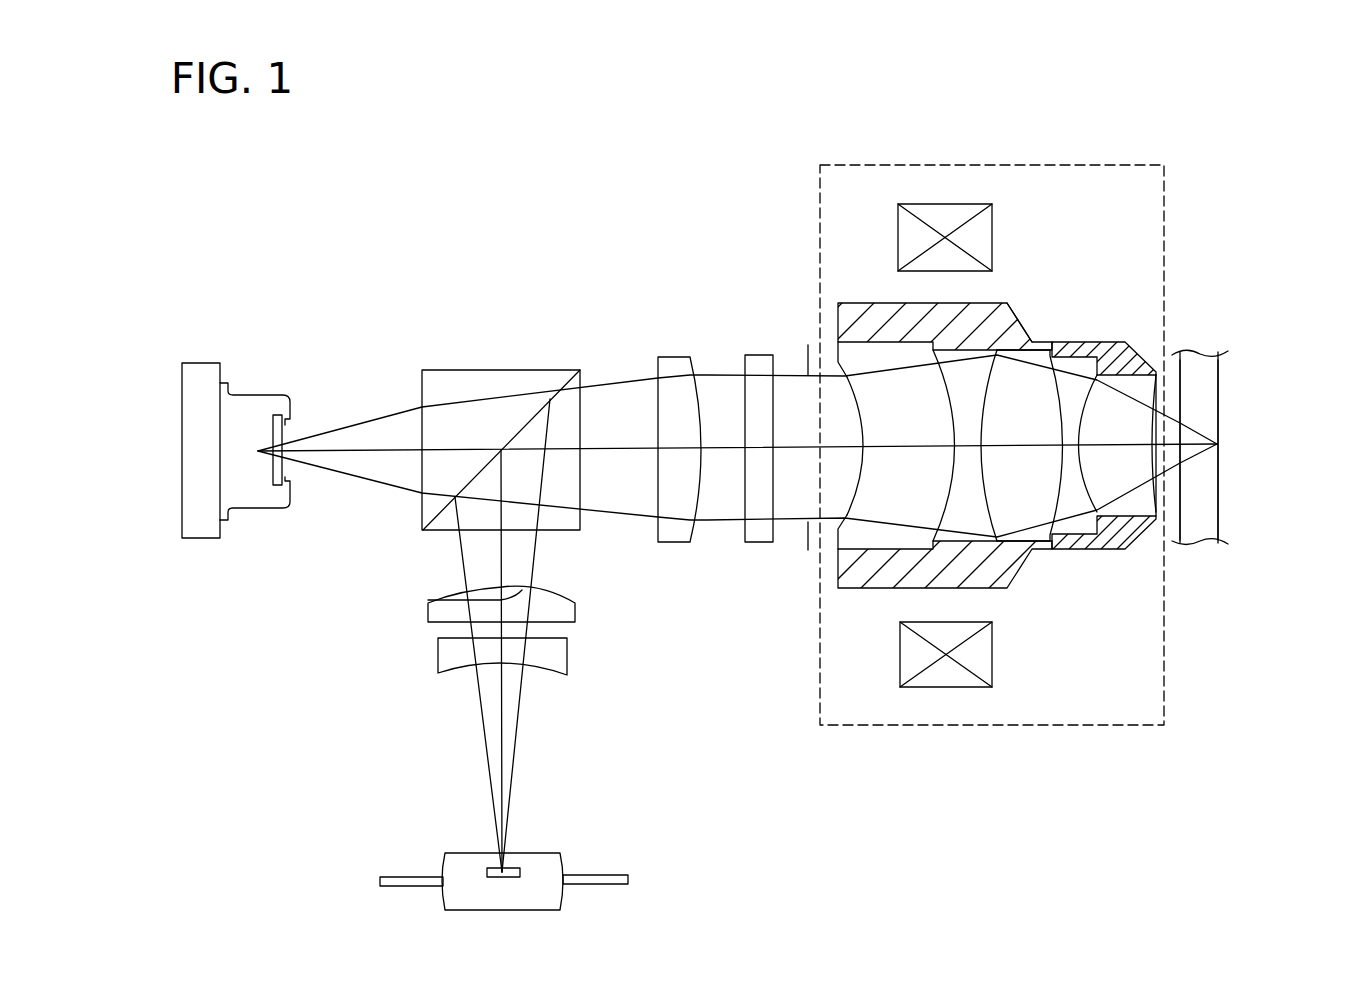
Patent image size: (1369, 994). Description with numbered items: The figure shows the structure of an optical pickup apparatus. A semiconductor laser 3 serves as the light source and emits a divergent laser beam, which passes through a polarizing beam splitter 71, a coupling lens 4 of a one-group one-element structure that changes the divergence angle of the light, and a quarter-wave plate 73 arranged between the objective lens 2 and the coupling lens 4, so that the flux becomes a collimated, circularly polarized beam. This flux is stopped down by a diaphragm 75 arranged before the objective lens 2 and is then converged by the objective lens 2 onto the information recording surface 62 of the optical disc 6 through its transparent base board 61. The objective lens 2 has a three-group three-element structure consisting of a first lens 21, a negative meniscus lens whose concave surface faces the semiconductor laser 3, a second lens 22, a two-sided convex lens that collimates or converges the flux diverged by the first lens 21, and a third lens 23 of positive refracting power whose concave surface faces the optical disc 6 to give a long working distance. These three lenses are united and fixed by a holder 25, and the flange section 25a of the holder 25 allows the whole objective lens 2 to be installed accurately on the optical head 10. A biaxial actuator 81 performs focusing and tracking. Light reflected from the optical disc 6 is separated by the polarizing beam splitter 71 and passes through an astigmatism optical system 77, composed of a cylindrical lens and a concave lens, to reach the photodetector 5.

The semiconductor laser 3 is at (254, 394).
The polarizing beam splitter 71 is at (495, 370).
The coupling lens 4 is at (675, 356).
The quarter-wave plate 73 is at (760, 355).
The diaphragm 75 is at (808, 550).
The optical head 10 is at (872, 725).
The biaxial actuator 81 is at (945, 204).
The holder 25 is at (865, 303).
The flange section 25a is at (992, 303).
The objective lens 2 is at (1073, 328).
The first lens 21 is at (877, 540).
The second lens 22 is at (1032, 543).
The third lens 23 is at (1128, 514).
The optical disc 6 is at (1200, 555).
The transparent base board 61 is at (1198, 362).
The information recording surface 62 is at (1212, 398).
The astigmatism optical system 77 is at (584, 629).
The photodetector 5 is at (553, 853).